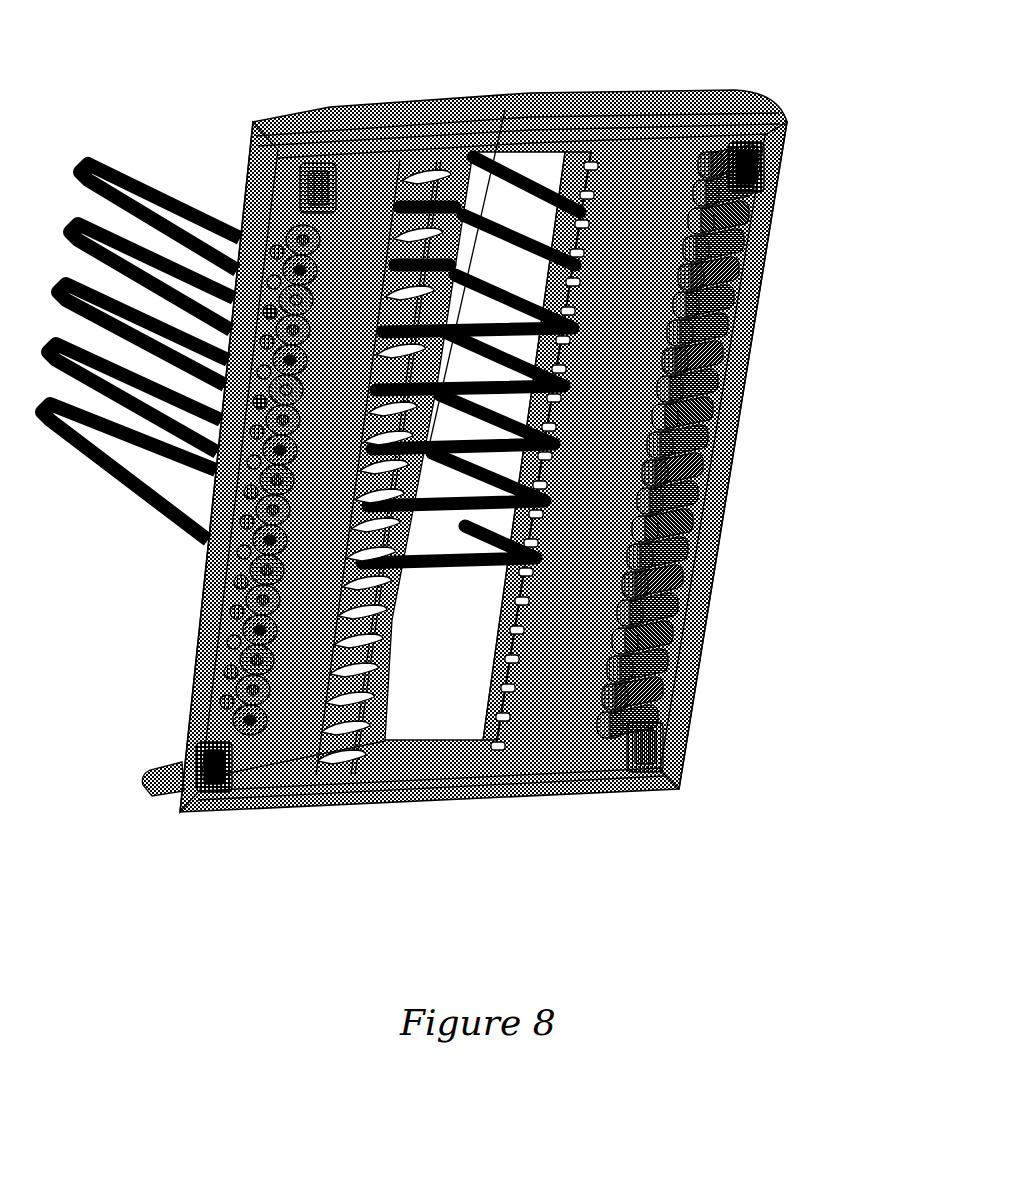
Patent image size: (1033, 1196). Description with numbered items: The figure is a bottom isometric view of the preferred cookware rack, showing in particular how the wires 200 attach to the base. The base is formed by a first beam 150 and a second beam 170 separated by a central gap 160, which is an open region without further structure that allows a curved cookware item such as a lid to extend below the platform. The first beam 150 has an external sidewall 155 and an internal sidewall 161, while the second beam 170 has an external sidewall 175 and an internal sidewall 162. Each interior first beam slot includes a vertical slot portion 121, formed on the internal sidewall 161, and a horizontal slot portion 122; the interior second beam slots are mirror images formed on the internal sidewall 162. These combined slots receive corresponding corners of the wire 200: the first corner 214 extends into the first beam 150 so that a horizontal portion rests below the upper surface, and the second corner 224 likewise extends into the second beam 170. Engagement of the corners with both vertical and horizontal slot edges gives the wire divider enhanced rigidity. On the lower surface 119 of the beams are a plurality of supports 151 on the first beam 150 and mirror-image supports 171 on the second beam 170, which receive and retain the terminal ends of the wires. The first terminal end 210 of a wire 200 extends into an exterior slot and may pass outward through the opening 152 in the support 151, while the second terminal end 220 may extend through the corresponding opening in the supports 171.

The lower surface 119 is at (428, 165).
The vertical slot portion 121 is at (505, 110).
The horizontal slot portion 122 is at (343, 108).
The first beam 150 is at (280, 745).
The support 151 is at (232, 575).
The opening 152 is at (240, 540).
The external sidewall 155 is at (150, 792).
The central gap 160 is at (426, 702).
The internal sidewall 161 is at (383, 742).
The internal sidewall 162 is at (503, 735).
The second beam 170 is at (590, 755).
The support 171 is at (712, 540).
The external sidewall 175 is at (683, 733).
The wire 200 is at (127, 490).
The first terminal end 210 is at (228, 525).
The first corner 214 is at (408, 536).
The second terminal end 220 is at (565, 496).
The second corner 224 is at (713, 414).